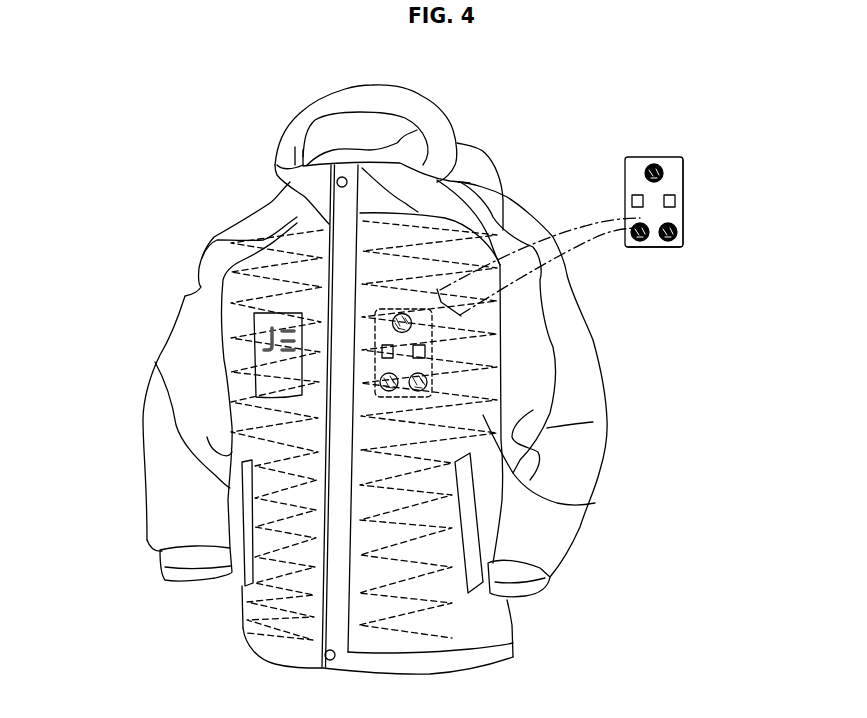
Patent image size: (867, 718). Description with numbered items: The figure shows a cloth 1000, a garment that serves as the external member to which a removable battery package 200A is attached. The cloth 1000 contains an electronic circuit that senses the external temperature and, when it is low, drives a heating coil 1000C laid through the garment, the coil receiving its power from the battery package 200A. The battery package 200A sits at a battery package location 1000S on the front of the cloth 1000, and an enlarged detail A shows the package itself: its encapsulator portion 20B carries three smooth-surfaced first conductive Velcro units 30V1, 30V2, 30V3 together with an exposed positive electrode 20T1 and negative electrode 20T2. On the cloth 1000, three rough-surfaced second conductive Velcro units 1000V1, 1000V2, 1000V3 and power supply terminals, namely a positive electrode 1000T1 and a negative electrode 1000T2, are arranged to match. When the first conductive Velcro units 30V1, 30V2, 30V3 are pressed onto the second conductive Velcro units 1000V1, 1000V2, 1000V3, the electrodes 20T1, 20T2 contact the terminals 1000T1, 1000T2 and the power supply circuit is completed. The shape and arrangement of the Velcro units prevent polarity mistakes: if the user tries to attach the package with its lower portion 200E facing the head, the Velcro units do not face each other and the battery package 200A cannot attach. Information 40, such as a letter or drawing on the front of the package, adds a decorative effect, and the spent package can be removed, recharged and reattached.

The cloth 1000 is at (489, 131).
The battery package location 1000S is at (593, 503).
The garment hem 1000C is at (513, 632).
The second conductive Velcro unit 1000V1 is at (405, 313).
The second conductive Velcro unit 1000V2 is at (380, 385).
The second conductive Velcro unit 1000V3 is at (428, 381).
The positive electrode 1000T1 is at (425, 347).
The negative electrode 1000T2 is at (381, 349).
The battery package 200A is at (376, 388).
The lower portion 200E is at (647, 247).
The module body 20B is at (675, 163).
The positive electrode 20T1 is at (643, 206).
The negative electrode 20T2 is at (675, 202).
The first conductive Velcro unit 30V1 is at (663, 170).
The first conductive Velcro unit 30V2 is at (677, 230).
The first conductive Velcro unit 30V3 is at (647, 241).
The information 40 is at (270, 334).
The detail region A is at (567, 228).